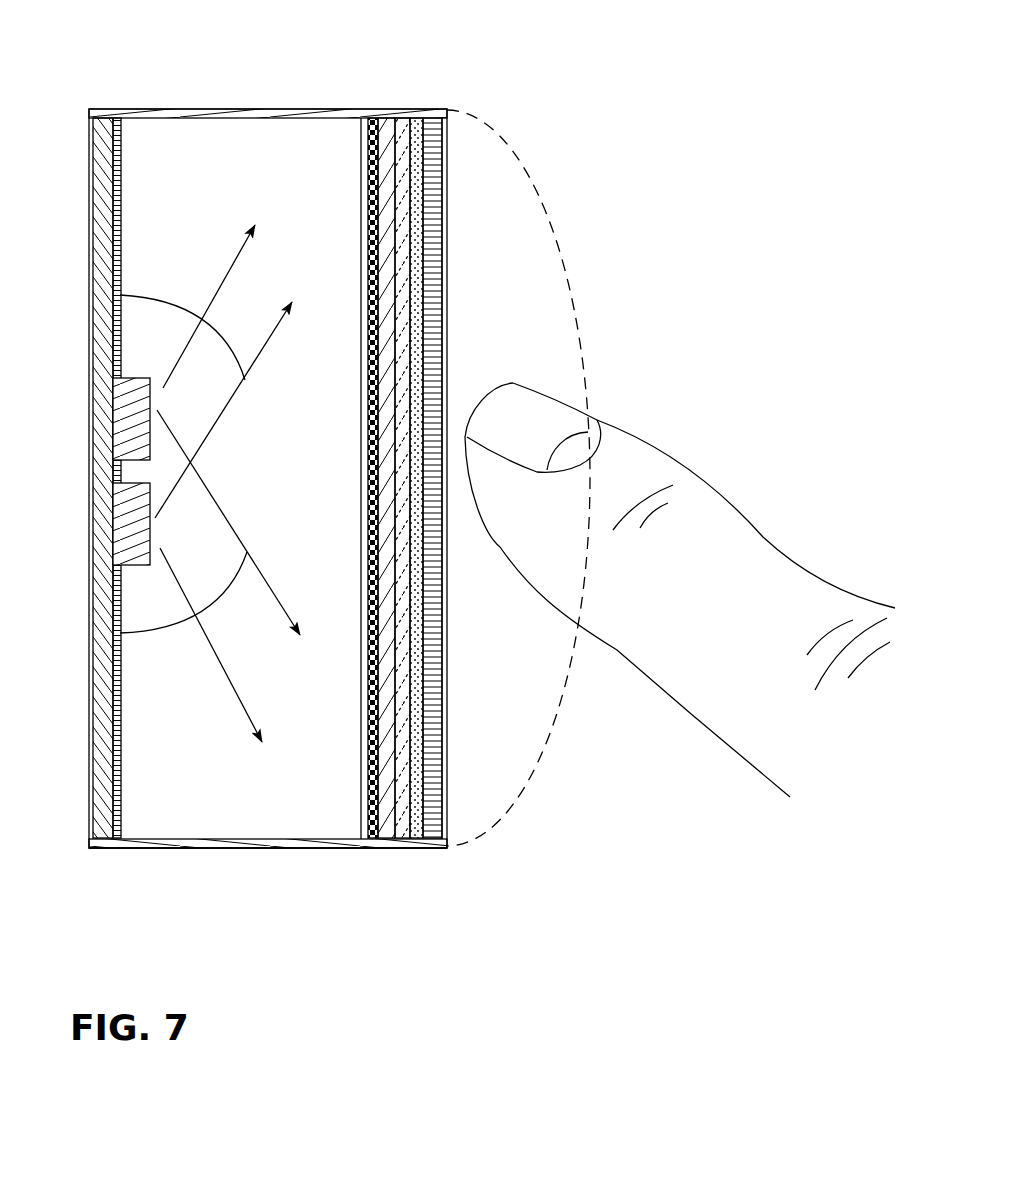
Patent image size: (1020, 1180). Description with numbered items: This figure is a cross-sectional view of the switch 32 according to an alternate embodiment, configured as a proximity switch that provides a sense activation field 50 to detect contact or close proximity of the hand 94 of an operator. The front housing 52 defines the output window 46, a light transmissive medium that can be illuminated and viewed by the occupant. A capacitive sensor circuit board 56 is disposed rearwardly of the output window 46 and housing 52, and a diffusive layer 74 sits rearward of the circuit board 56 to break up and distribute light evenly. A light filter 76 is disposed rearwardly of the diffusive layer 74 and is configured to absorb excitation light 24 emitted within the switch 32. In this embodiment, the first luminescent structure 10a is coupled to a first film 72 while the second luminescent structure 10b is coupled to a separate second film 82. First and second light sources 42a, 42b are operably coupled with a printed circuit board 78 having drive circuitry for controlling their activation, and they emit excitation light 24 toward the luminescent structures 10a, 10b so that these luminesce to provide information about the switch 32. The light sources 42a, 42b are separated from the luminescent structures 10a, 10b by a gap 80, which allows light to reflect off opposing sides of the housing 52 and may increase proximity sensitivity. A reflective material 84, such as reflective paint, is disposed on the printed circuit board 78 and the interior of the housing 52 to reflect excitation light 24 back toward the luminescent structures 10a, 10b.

The printed circuit board 78 is at (100, 180).
The reflective material 84 is at (213, 117).
The gap 80 is at (197, 166).
The first luminescent structure 10a is at (366, 290).
The second luminescent structure 10b is at (360, 645).
The second film 82 is at (366, 139).
The light transmissive film 72 is at (388, 826).
The light filter 76 is at (396, 843).
The diffusive layer 74 is at (419, 843).
The capacitive sensor circuit board 56 is at (440, 847).
The output window 46 is at (452, 178).
The sense activation field 50 is at (554, 222).
The switch 32 is at (612, 383).
The hand 94 is at (757, 562).
The excitation light 24 is at (120, 295).
The first light source 42a is at (130, 418).
The second light source 42b is at (133, 515).
The front housing 52 is at (97, 850).